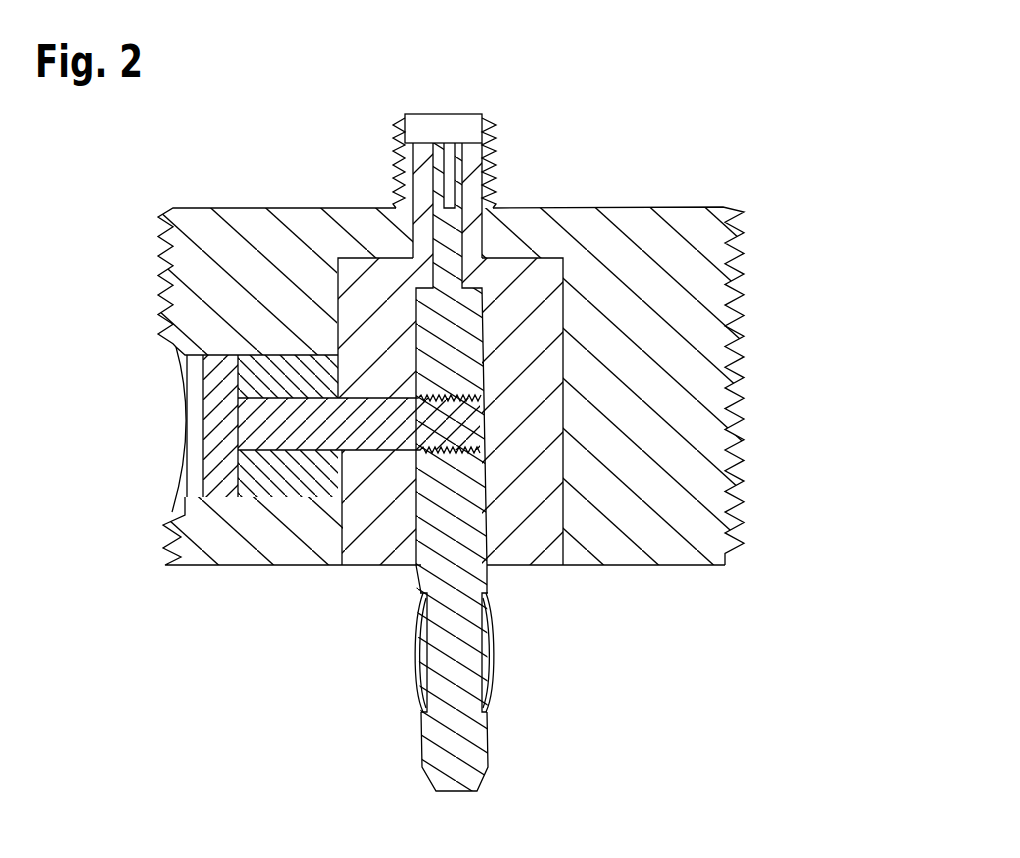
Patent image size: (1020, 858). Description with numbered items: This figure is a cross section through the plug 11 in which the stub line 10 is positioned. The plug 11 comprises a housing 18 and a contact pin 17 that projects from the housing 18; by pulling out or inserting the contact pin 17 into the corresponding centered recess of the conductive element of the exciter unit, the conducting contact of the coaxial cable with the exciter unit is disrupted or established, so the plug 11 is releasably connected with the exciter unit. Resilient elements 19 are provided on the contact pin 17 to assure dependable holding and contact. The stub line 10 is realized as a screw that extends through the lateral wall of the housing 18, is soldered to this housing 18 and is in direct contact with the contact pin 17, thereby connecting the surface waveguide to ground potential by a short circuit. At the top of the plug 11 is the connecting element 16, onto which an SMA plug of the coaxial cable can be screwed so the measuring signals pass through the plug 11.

The stub line 10 is at (215, 413).
The plug 11 is at (791, 304).
The connecting element 16 is at (466, 122).
The contact pin 17 is at (470, 750).
The housing 18 is at (642, 230).
The resilient elements 19 is at (495, 638).